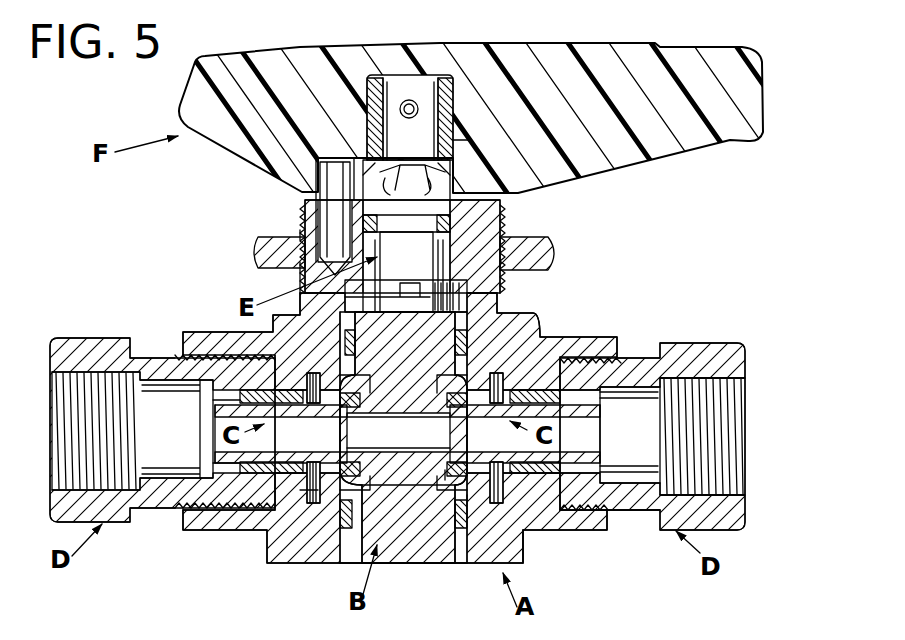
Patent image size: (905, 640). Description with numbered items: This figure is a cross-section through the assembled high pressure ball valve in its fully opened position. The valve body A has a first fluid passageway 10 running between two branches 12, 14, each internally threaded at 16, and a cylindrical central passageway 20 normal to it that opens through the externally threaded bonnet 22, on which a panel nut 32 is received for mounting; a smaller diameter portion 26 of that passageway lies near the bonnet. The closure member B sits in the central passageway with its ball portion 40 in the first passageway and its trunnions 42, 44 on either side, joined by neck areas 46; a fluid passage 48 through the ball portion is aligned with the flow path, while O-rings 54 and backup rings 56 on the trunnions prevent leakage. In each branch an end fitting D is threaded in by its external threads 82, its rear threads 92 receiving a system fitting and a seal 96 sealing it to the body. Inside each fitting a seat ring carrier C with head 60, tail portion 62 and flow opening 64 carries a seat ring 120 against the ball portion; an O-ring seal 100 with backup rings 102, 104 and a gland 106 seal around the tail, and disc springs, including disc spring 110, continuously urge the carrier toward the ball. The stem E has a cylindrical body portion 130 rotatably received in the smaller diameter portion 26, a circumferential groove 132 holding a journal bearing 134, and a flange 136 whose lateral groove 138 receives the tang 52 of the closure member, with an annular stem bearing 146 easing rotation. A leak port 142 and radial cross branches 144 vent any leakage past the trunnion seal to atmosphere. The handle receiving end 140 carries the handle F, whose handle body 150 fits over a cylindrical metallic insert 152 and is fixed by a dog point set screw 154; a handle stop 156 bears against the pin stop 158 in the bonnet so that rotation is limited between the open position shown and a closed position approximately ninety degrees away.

The first fluid passageway 10 is at (338, 372).
The branch 12 is at (180, 330).
The branch 14 is at (622, 346).
The internal threads 16 is at (585, 513).
The central passageway 20 is at (403, 543).
The bonnet 22 is at (497, 275).
The smaller diameter portion 26 is at (445, 258).
The panel nut 32 is at (545, 247).
The ball portion 40 is at (433, 402).
The trunnion 42 is at (425, 375).
The trunnion 44 is at (425, 522).
The neck areas 46 is at (445, 480).
The fluid passage 48 is at (424, 433).
The tang 52 is at (405, 331).
The O-ring 54 is at (458, 540).
The backup ring 56 is at (467, 500).
The head 60 is at (462, 500).
The tail portion 62 is at (538, 400).
The fluid flow opening 64 is at (266, 452).
The external threads 82 is at (620, 513).
The threads 92 is at (715, 487).
The seal 96 is at (527, 535).
The O-ring seal 100 is at (280, 392).
The backup ring 102 is at (236, 465).
The backup ring 104 is at (232, 518).
The gland 106 is at (322, 470).
The disc spring 110 is at (308, 493).
The seat ring 120 is at (448, 460).
The cylindrical body portion 130 is at (523, 133).
The circumferential groove 132 is at (440, 224).
The journal bearing 134 is at (367, 227).
The flange 136 is at (465, 323).
The lateral groove 138 is at (403, 298).
The handle receiving end 140 is at (445, 80).
The leak port 142 is at (296, 278).
The radial cross branches 144 is at (473, 135).
The stem bearing 146 is at (467, 282).
The handle body 150 is at (195, 107).
The cap top 152 is at (447, 95).
The dog point set screw 154 is at (406, 100).
The handle stop 156 is at (320, 170).
The stop 158 is at (330, 212).